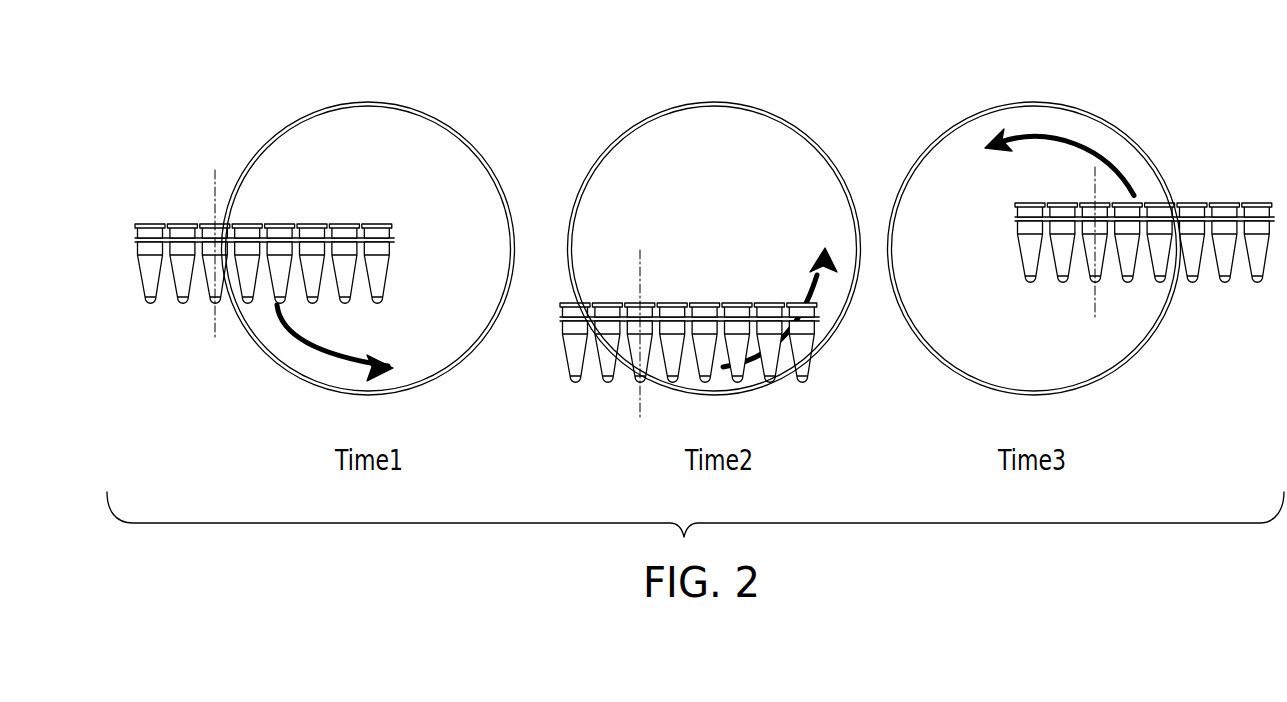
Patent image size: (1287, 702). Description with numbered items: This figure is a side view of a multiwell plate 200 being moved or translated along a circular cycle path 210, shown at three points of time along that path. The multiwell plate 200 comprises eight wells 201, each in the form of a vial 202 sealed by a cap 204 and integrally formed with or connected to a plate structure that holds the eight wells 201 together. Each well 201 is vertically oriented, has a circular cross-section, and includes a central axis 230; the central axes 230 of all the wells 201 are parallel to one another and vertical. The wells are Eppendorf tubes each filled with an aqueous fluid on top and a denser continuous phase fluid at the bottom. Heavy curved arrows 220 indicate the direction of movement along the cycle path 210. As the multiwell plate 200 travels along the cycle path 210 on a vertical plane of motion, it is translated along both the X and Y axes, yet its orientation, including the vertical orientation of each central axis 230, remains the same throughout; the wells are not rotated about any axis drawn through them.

The multiwell plate 200 is at (693, 294).
The well 201 is at (178, 288).
The vial 202 is at (392, 272).
The cap 204 is at (395, 227).
The circular cycle path 210 is at (407, 107).
The rotation direction arrow 220 is at (310, 348).
The central axis 230 is at (215, 183).